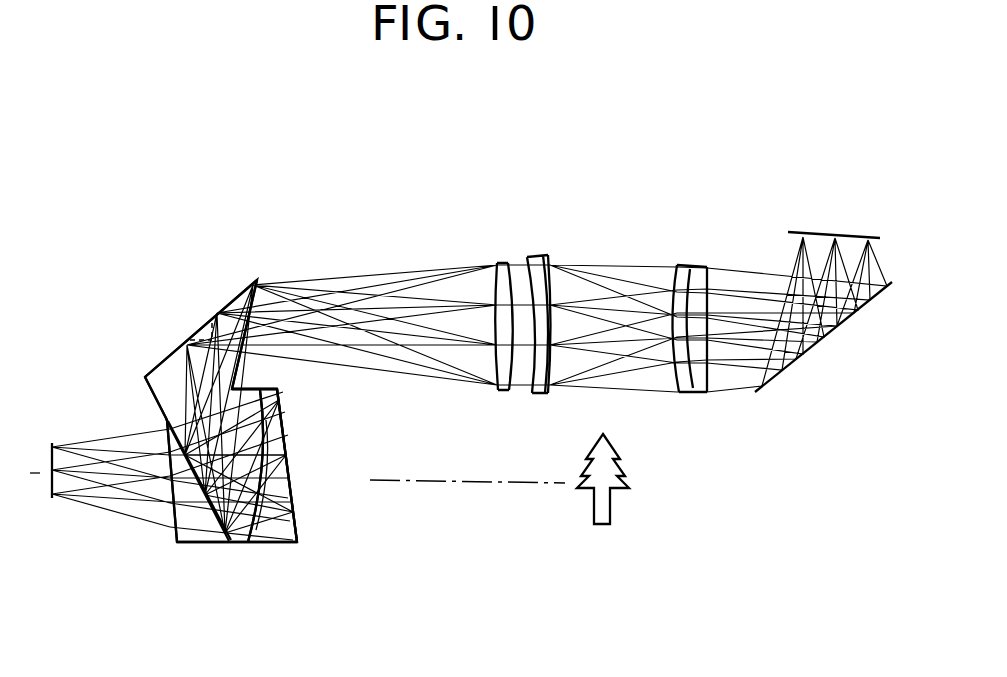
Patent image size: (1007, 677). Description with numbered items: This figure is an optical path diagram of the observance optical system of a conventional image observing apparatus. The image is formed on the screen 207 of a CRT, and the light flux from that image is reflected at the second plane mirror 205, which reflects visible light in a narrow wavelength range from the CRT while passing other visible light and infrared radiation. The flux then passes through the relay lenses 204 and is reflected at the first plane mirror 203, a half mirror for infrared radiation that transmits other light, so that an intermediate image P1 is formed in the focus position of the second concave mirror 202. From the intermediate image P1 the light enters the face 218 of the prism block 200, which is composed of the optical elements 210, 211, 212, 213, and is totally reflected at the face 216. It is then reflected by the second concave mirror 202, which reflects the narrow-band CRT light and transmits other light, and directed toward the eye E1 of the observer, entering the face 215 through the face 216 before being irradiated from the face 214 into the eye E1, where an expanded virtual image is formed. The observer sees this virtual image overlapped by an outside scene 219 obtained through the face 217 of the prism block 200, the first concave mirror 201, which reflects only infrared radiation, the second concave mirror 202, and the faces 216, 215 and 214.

The prism block 200 is at (313, 579).
The first concave mirror 201 is at (270, 477).
The second concave mirror 202 is at (246, 523).
The first plane mirror 203 is at (232, 300).
The relay lenses 204 is at (720, 222).
The second plane mirror 205 is at (883, 293).
The screen of a CRT 207 is at (848, 232).
The optical element 210 is at (203, 530).
The optical element 211 is at (278, 393).
The optical element 212 is at (278, 410).
The optical element 213 is at (280, 447).
The face 214 is at (170, 507).
The face 215 is at (168, 445).
The face 216 is at (147, 383).
The face 217 is at (293, 495).
The face 218 is at (247, 383).
The outside scene 219 is at (612, 512).
The eye E1 is at (52, 505).
The intermediate image P1 is at (212, 322).